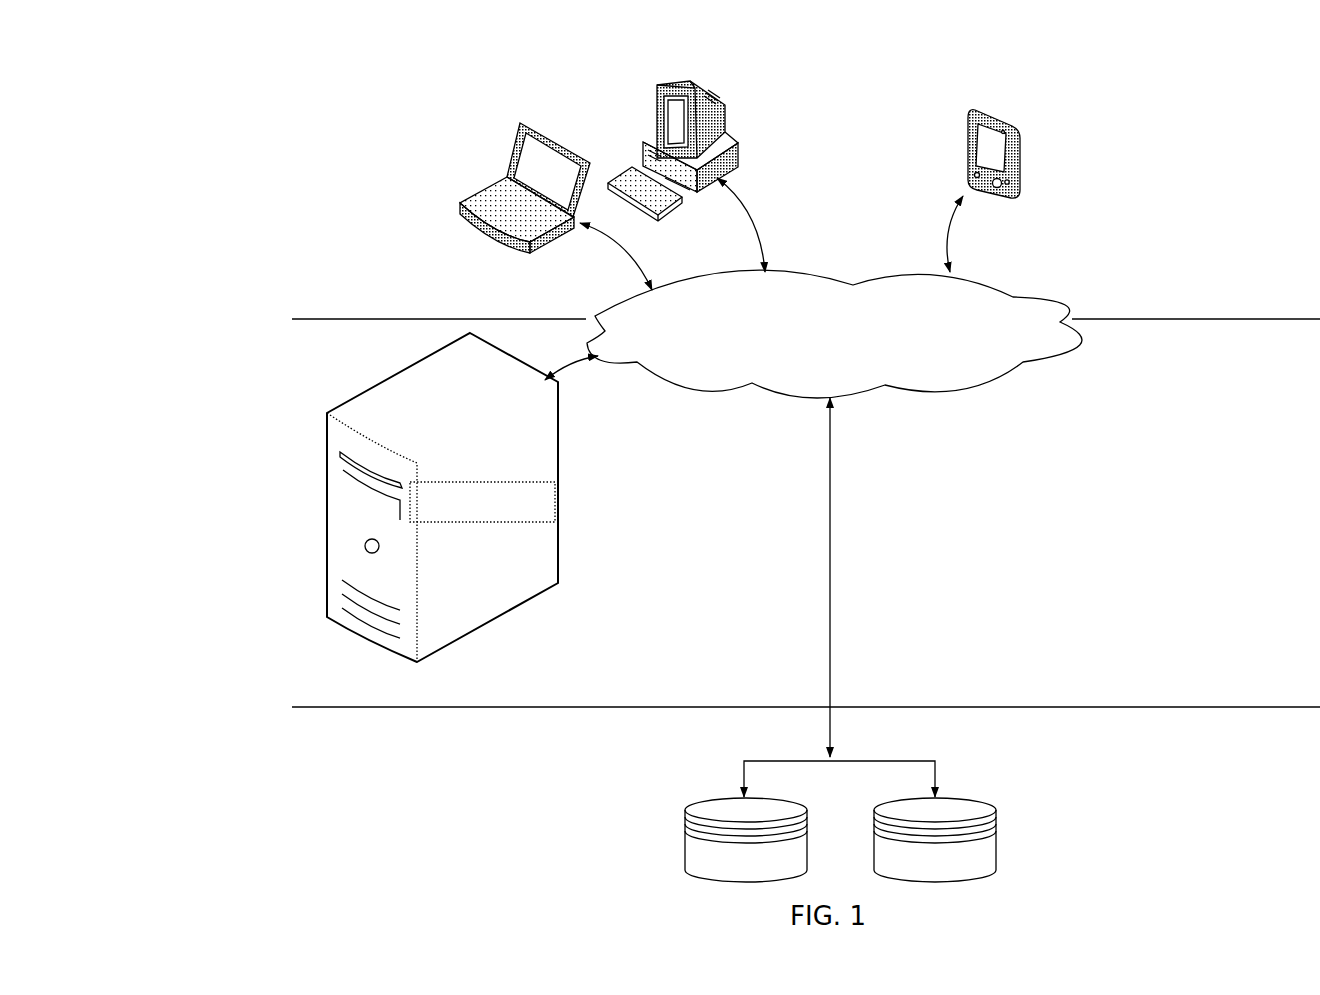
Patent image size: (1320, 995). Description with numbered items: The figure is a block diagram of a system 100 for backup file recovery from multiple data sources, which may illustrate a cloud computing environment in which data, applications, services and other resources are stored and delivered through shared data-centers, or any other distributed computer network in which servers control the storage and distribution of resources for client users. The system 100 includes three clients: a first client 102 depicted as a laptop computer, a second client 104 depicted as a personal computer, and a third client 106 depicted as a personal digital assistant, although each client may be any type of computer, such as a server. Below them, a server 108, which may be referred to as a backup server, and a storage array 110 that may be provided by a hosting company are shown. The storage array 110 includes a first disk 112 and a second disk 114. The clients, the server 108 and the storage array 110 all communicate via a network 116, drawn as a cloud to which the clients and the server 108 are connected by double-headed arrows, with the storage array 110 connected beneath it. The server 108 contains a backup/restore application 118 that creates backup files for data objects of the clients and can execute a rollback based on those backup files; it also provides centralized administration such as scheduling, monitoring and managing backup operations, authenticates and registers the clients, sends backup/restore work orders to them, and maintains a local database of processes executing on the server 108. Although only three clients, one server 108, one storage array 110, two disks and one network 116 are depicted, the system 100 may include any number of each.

The system 100 is at (802, 98).
The first client 102 is at (520, 123).
The second client 104 is at (657, 85).
The third client 106 is at (967, 112).
The server 108 is at (407, 513).
The storage array 110 is at (968, 812).
The first disk 112 is at (700, 802).
The second disk 114 is at (886, 806).
The network 116 is at (834, 334).
The backup/restore application 118 is at (482, 502).